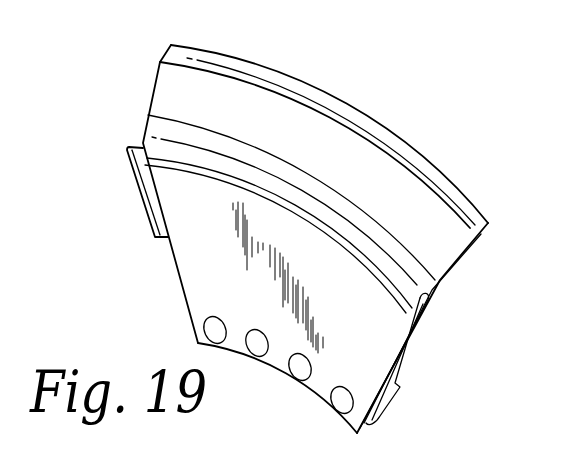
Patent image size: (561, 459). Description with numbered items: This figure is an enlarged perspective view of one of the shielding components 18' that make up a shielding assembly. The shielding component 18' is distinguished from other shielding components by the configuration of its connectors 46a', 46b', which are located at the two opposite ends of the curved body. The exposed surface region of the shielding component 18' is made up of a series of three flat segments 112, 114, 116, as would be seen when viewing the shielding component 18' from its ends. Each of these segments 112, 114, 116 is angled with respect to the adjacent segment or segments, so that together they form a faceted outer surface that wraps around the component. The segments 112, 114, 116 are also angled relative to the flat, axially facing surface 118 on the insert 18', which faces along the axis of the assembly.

The shielding component 18' is at (265, 239).
The connector 46a' is at (97, 192).
The connector 46b' is at (431, 360).
The flat segment 112 is at (292, 186).
The flat segment 114 is at (310, 128).
The flat segment 116 is at (288, 80).
The flat, axially facing surface 118 is at (220, 285).